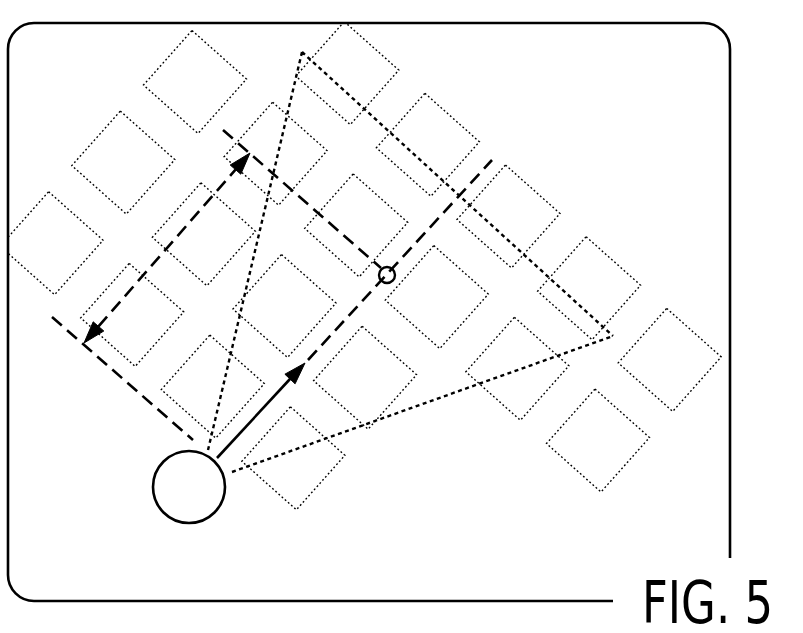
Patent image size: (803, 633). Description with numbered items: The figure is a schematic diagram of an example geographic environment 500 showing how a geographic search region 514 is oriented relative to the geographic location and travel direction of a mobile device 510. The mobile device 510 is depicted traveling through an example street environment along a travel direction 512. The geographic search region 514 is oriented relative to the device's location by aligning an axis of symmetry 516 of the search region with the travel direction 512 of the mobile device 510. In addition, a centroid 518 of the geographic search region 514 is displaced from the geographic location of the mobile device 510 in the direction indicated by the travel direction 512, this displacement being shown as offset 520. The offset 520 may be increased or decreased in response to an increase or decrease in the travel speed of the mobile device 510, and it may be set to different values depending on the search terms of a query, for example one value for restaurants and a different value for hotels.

The geographic environment 500 is at (639, 88).
The mobile device 510 is at (206, 498).
The travel direction 512 is at (228, 446).
The geographic search region 514 is at (411, 409).
The axis of symmetry 516 is at (490, 166).
The centroid 518 is at (396, 277).
The offset 520 is at (167, 248).